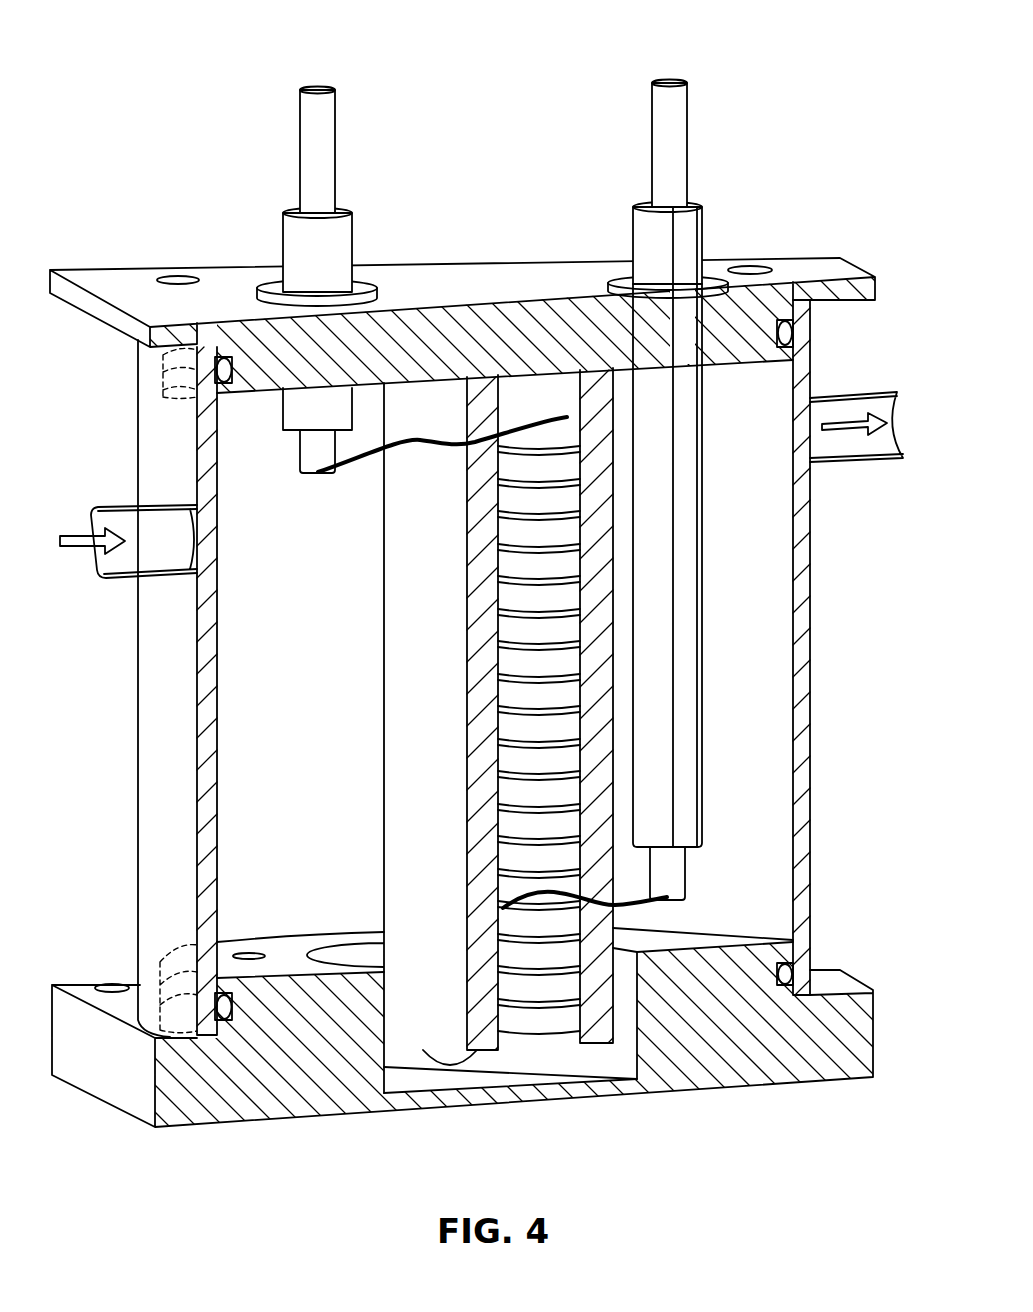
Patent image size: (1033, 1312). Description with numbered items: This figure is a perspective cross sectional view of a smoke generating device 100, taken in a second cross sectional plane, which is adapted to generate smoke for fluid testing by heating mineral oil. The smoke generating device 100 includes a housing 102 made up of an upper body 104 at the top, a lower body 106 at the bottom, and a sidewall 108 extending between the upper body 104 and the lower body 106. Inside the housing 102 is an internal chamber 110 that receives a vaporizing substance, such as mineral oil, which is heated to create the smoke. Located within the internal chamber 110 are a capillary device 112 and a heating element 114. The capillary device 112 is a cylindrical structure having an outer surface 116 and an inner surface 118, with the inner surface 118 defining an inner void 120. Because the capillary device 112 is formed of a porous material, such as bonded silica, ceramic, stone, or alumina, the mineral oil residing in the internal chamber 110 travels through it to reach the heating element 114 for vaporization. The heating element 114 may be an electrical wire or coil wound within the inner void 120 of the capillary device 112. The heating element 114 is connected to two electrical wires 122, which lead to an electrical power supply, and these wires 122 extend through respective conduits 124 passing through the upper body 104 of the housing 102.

The smoke generating device 100 is at (108, 68).
The housing 102 is at (820, 226).
The upper body 104 is at (96, 269).
The lower body 106 is at (822, 1081).
The sidewall 108 is at (812, 622).
The internal chamber 110 is at (255, 838).
The capillary device 112 is at (376, 638).
The heating element 114 is at (527, 543).
The outer surface 116 is at (392, 737).
The inner surface 118 is at (585, 718).
The inner void 120 is at (553, 607).
The wires 122 is at (413, 447).
The conduits 124 is at (343, 238).